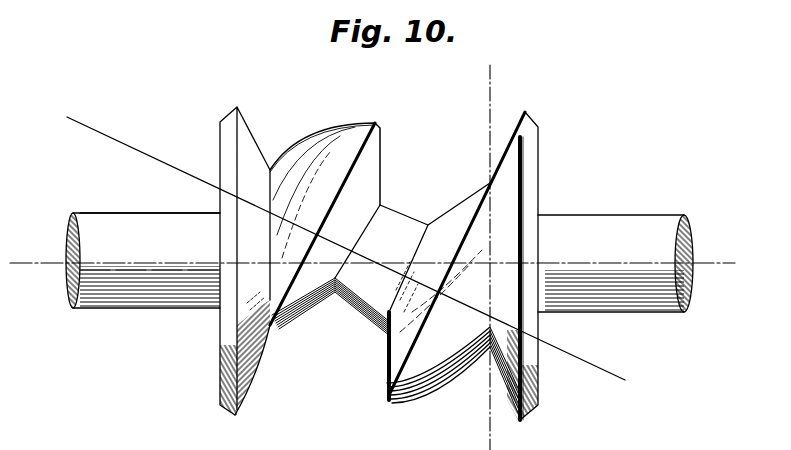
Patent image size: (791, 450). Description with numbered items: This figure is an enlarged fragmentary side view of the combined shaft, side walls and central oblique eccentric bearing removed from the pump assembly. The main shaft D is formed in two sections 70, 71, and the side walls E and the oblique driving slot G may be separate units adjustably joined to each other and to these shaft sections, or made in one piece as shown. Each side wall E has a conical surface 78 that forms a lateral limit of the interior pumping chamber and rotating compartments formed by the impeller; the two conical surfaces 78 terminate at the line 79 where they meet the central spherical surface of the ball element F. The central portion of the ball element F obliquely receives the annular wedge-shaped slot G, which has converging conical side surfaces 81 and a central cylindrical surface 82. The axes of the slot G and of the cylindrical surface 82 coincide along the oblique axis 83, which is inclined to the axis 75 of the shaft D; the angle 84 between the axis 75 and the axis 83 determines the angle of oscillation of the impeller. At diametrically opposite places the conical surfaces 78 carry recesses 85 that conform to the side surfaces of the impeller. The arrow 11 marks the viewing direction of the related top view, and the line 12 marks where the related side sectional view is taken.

The arrow 11 is at (383, 119).
The line 12— 12 is at (509, 437).
The section of the main shaft 70 is at (185, 304).
The section of the main shaft 71 is at (637, 300).
The axis of the shaft 75 is at (58, 265).
The conical surface 78 is at (250, 125).
The line 79 is at (272, 170).
The converging conical side surface 81 is at (378, 340).
The central cylindrical surface 82 is at (403, 212).
The axis of the slot 83 is at (145, 158).
The angle 84 is at (124, 258).
The recess 85 is at (239, 410).
The main shaft D is at (143, 286).
The side wall E is at (245, 355).
The ball element F is at (313, 153).
The oblique driving slot G is at (415, 167).